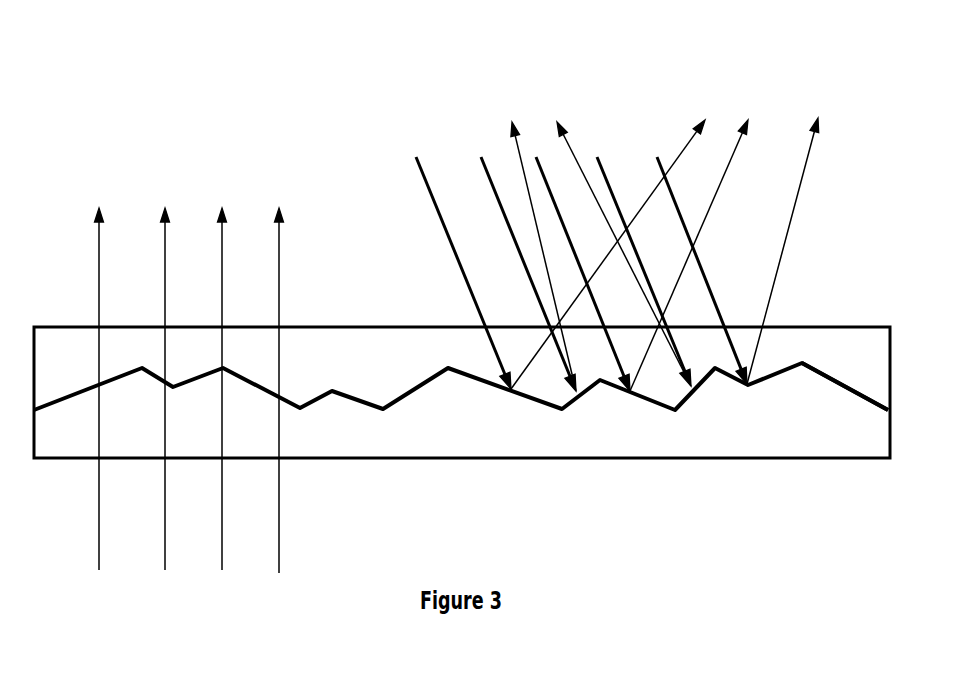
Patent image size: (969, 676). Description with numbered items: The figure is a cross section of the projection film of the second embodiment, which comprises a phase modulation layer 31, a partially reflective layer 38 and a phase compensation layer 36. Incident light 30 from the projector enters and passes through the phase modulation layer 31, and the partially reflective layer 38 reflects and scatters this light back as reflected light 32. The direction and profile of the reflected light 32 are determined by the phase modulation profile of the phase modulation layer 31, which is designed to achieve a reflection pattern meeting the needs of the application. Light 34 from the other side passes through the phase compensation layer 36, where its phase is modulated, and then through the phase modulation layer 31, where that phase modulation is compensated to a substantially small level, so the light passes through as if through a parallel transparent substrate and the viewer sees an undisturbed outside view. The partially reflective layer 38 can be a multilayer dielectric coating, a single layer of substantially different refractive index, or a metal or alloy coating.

The incident light 30 is at (667, 160).
The phase modulation layer 31 is at (462, 392).
The reflected light 32 is at (507, 120).
The transmitted light 34 is at (80, 210).
The phase compensation layer 36 is at (461, 398).
The partially reflective layer 38 is at (815, 390).